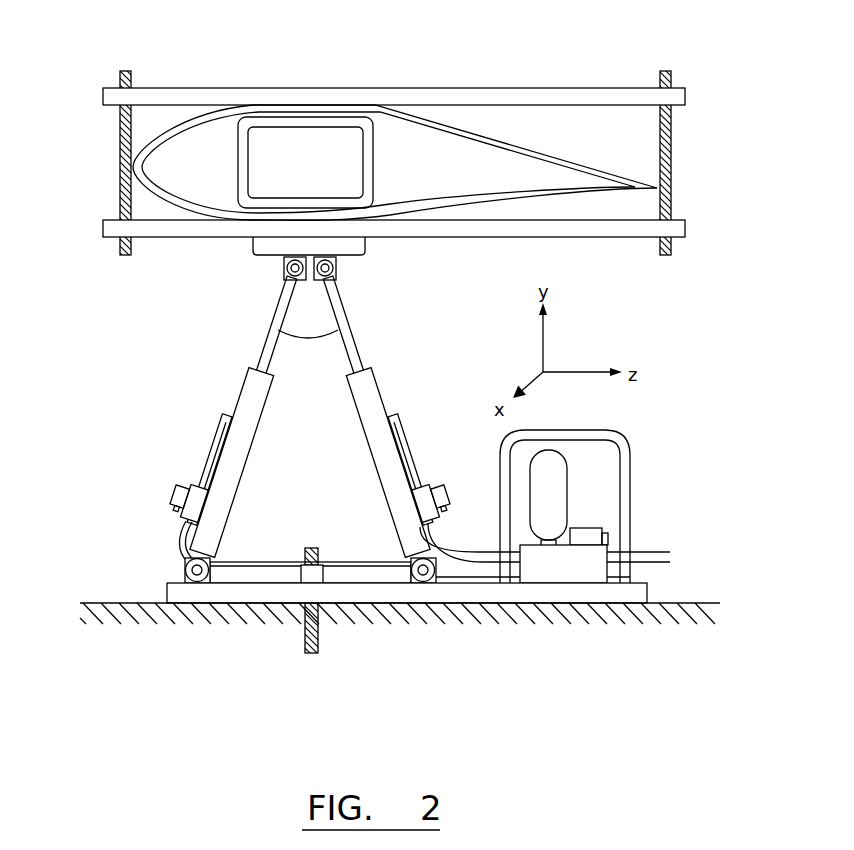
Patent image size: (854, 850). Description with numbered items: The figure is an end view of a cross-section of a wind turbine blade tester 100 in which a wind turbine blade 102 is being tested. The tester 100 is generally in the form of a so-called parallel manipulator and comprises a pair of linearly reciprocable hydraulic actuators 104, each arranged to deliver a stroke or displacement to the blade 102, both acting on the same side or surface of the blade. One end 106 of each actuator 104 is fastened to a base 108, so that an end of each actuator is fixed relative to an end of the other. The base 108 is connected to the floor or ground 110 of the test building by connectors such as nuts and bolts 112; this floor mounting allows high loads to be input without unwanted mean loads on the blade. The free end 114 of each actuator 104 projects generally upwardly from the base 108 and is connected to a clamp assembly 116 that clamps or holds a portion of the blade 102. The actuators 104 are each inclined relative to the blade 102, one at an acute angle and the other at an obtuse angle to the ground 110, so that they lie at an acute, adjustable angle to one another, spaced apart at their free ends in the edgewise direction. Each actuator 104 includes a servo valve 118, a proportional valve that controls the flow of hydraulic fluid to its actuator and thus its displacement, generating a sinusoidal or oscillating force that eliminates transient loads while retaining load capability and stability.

The wind turbine blade tester 100 is at (156, 465).
The wind turbine blade 102 is at (555, 152).
The linearly reciprocable actuator 104 is at (370, 402).
The end of actuator 106 is at (185, 568).
The base 108 is at (245, 592).
The floor or ground 110 is at (120, 612).
The connectors 112 is at (318, 640).
The free end of actuator 114 is at (283, 270).
The clamp assembly 116 is at (580, 227).
The servo valve 118 is at (212, 452).